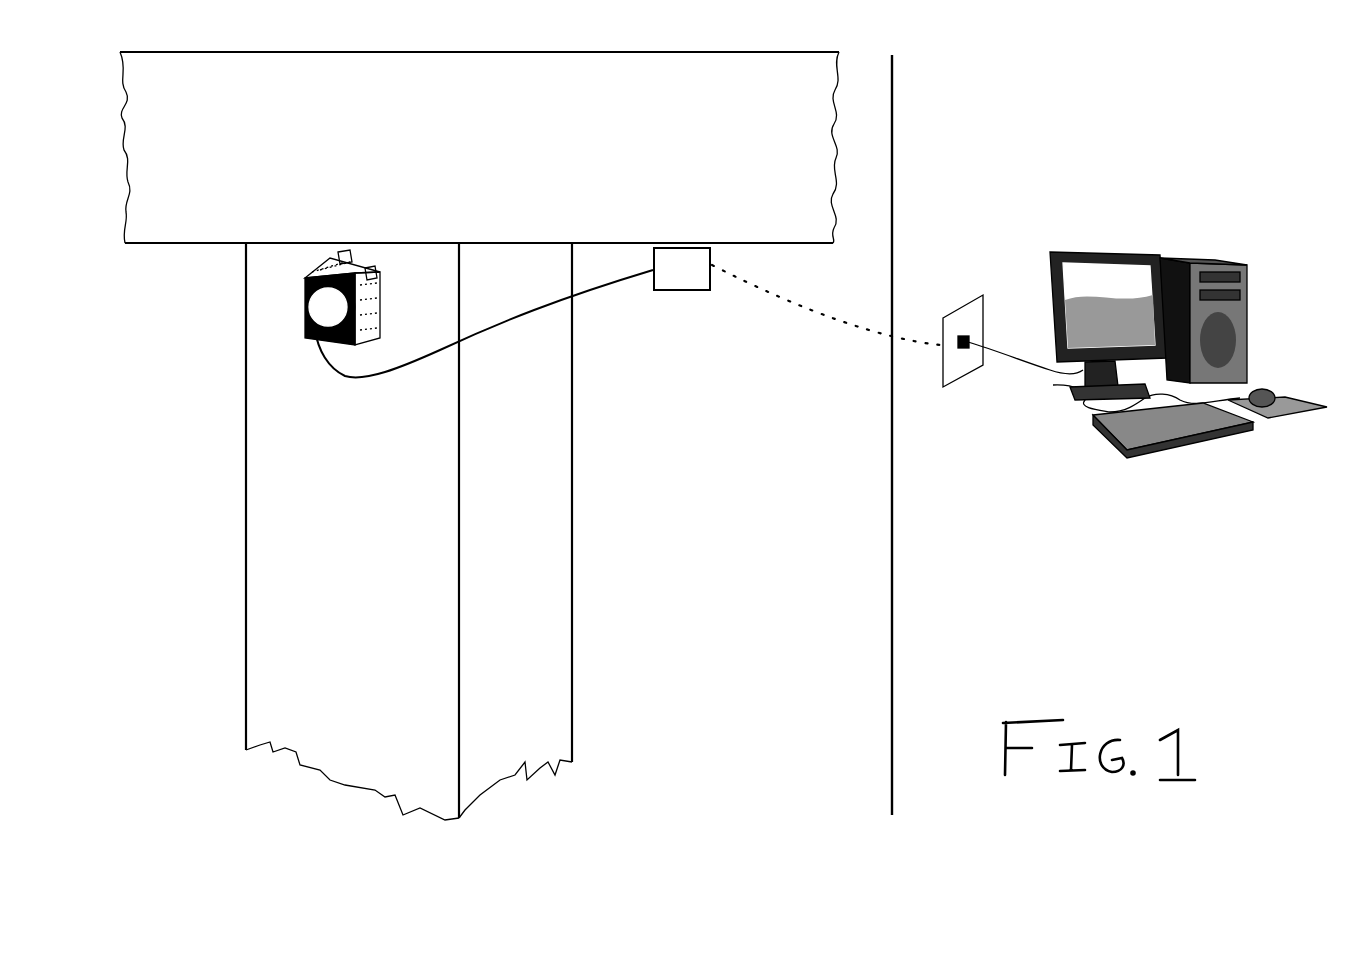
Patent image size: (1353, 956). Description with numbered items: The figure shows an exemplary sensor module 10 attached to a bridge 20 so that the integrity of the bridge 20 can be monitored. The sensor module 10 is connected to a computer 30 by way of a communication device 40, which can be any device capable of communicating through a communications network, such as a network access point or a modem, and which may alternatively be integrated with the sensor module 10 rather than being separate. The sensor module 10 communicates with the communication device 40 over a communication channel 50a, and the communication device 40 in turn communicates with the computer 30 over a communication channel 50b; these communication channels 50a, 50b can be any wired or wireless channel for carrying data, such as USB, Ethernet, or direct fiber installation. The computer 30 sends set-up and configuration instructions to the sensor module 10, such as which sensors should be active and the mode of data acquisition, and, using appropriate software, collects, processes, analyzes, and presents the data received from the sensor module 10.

The sensor module 10 is at (305, 295).
The bridge 20 is at (246, 243).
The computer 30 is at (1055, 447).
The communication device 40 is at (678, 290).
The communication channel 50a is at (593, 288).
The communication channel 50b is at (845, 328).